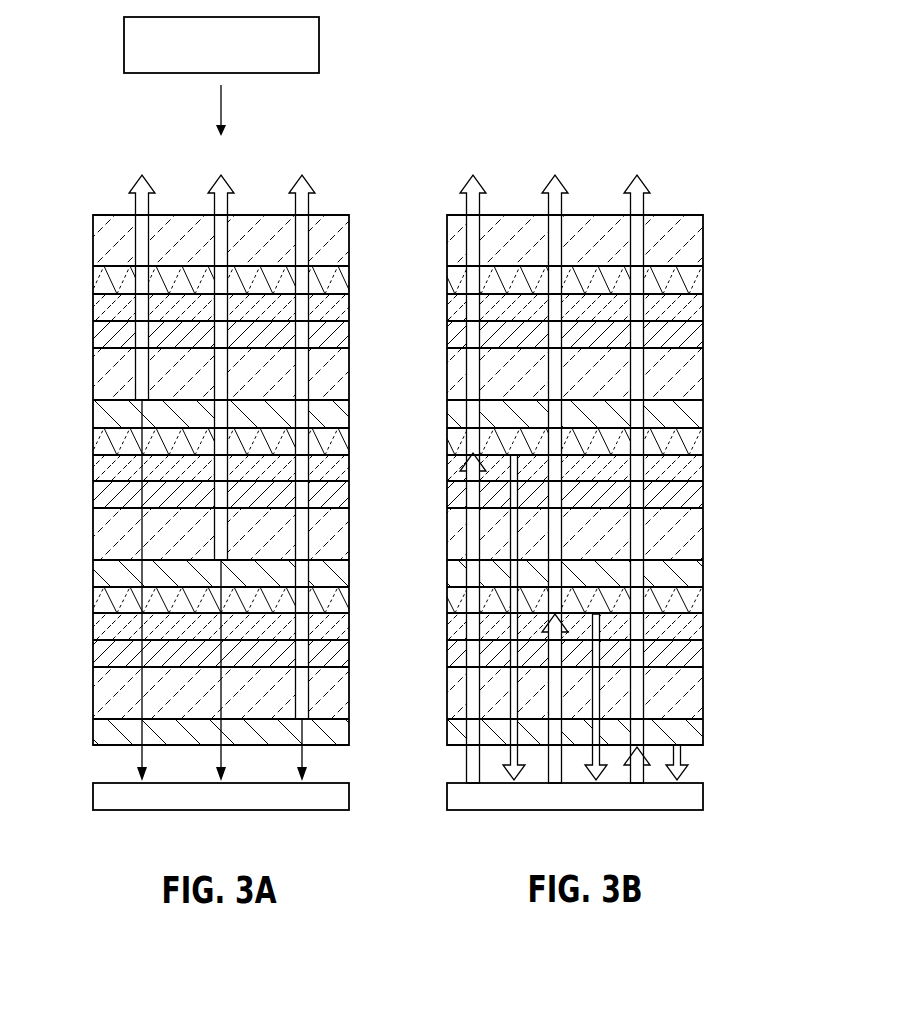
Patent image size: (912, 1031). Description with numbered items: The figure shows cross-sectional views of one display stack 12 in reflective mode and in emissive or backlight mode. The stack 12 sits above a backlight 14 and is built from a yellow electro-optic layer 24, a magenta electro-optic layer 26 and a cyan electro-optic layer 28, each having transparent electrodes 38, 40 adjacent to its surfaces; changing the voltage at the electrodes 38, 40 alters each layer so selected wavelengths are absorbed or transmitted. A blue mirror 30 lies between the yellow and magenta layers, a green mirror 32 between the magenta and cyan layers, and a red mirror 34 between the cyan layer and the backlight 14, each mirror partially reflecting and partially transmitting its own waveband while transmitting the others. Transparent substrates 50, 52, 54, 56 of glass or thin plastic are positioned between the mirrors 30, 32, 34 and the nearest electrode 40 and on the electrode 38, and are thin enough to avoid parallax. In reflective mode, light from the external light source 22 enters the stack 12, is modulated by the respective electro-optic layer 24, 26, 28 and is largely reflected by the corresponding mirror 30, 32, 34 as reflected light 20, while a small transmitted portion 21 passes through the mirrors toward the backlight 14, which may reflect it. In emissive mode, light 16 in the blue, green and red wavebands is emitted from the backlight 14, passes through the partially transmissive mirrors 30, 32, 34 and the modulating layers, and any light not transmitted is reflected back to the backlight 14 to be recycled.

In FIG. 3A, the display stack 12 is at (192, 440).
In FIG. 3B, the display stack 12 is at (581, 495).
In FIG. 3A, the backlight 14 is at (107, 795).
In FIG. 3B, the backlight 14 is at (690, 794).
In FIG. 3B, the light emitted from the backlight 16 is at (480, 200).
In FIG. 3A, the modulated and reflected light 20 is at (149, 200).
In FIG. 3A, the transmitted light 21 is at (140, 762).
In FIG. 3A, the external light source 22 is at (212, 58).
In FIG. 3A, the yellow electro-optic layer 24 is at (107, 302).
In FIG. 3B, the yellow electro-optic layer 24 is at (690, 303).
In FIG. 3A, the magenta electro-optic layer 26 is at (107, 461).
In FIG. 3B, the magenta electro-optic layer 26 is at (690, 462).
In FIG. 3A, the cyan electro-optic layer 28 is at (107, 620).
In FIG. 3B, the cyan electro-optic layer 28 is at (690, 621).
In FIG. 3A, the blue mirror 30 is at (107, 406).
In FIG. 3B, the blue mirror 30 is at (690, 407).
In FIG. 3A, the green mirror 32 is at (107, 567).
In FIG. 3B, the green mirror 32 is at (690, 568).
In FIG. 3A, the red mirror 34 is at (107, 727).
In FIG. 3B, the red mirror 34 is at (690, 728).
In FIG. 3A, the electrode 38 is at (107, 274).
In FIG. 3B, the electrode 38 is at (690, 275).
In FIG. 3A, the electrode 40 is at (107, 329).
In FIG. 3B, the electrode 40 is at (690, 330).
In FIG. 3A, the transparent substrate 50 is at (107, 236).
In FIG. 3B, the transparent substrate 50 is at (690, 237).
In FIG. 3A, the transparent substrate 52 is at (107, 373).
In FIG. 3B, the transparent substrate 52 is at (690, 374).
In FIG. 3A, the transparent substrate 54 is at (107, 529).
In FIG. 3B, the transparent substrate 54 is at (690, 530).
In FIG. 3A, the transparent substrate 56 is at (107, 688).
In FIG. 3B, the transparent substrate 56 is at (690, 689).